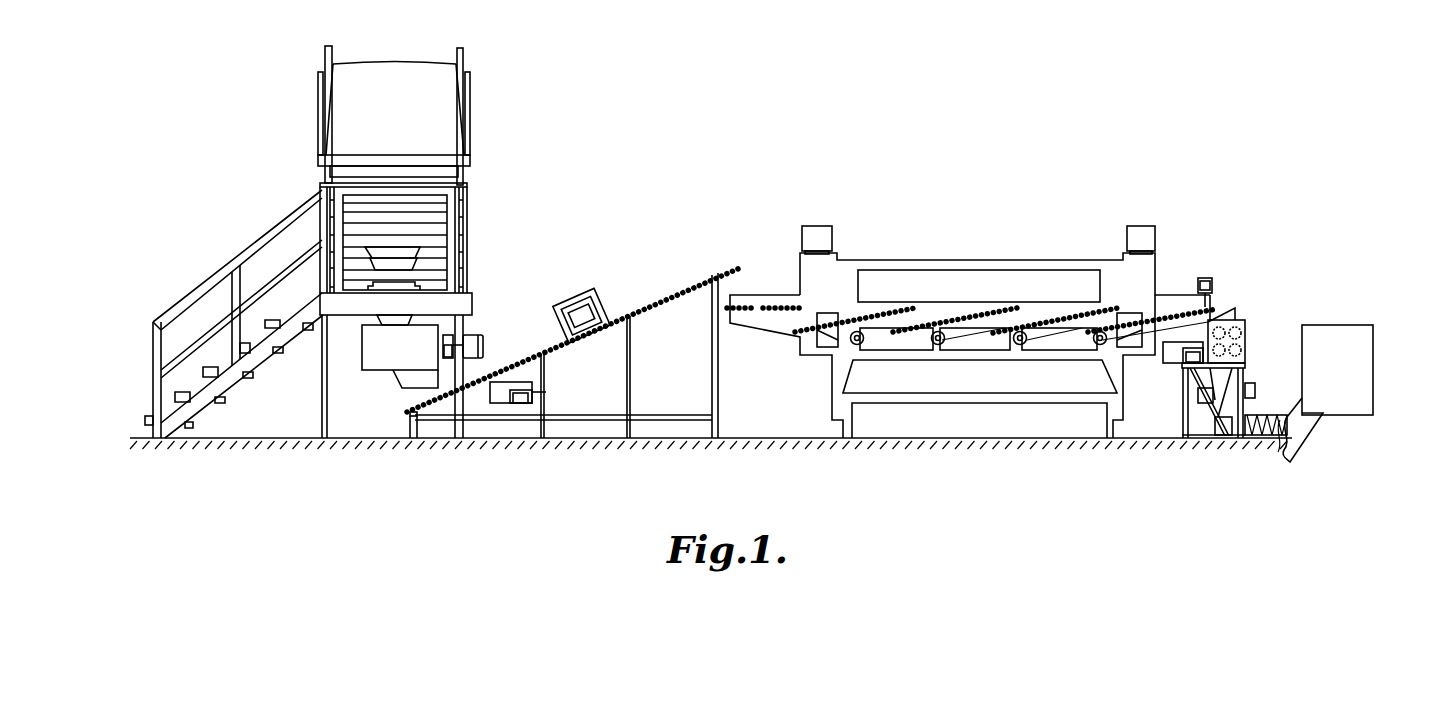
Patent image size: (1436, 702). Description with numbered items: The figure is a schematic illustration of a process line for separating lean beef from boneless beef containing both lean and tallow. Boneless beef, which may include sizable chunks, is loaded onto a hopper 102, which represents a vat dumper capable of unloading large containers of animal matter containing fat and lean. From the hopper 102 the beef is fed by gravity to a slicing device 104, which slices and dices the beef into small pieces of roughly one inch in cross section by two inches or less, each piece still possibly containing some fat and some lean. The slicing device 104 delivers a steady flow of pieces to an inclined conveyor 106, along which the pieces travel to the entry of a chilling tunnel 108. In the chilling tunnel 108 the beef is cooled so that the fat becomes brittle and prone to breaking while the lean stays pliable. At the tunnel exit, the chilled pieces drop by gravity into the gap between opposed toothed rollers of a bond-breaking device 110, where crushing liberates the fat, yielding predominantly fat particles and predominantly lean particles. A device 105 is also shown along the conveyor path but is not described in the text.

The hopper 102 is at (472, 108).
The slicing device 104 is at (387, 370).
The scanner 105 is at (572, 292).
The inclined conveyor 106 is at (708, 273).
The chilling tunnel 108 is at (953, 260).
The bond-breaking device 110 is at (1247, 323).